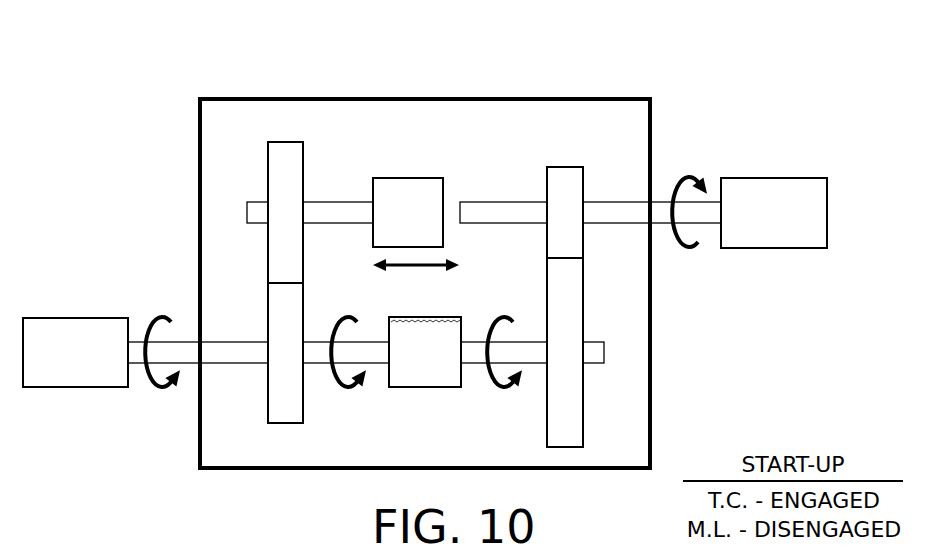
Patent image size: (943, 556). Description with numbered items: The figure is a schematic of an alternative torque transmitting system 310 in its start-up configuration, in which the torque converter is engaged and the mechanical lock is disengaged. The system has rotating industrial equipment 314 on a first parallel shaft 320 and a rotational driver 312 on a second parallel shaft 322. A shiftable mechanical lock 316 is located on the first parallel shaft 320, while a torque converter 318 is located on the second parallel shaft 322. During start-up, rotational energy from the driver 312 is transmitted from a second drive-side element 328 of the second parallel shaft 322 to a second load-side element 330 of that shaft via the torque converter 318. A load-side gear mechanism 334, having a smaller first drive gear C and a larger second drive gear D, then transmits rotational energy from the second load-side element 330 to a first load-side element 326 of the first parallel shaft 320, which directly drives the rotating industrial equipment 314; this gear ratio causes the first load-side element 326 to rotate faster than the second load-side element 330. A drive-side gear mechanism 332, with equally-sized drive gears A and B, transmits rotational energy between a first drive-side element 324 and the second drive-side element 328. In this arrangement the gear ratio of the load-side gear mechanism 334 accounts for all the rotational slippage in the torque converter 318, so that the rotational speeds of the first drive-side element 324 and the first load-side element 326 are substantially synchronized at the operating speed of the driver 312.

The torque transmitting system 310 is at (641, 54).
The rotational driver 312 is at (103, 318).
The rotating industrial equipment 314 is at (800, 178).
The shiftable mechanical lock 316 is at (416, 178).
The torque converter 318 is at (412, 387).
The first parallel shaft 320 is at (257, 192).
The second parallel shaft 322 is at (257, 374).
The first drive-side element 324 is at (337, 202).
The first load-side element 326 is at (493, 202).
The second drive-side element 328 is at (371, 364).
The second load-side element 330 is at (529, 364).
The drive-side gear mechanism 332 is at (287, 132).
The load-side gear mechanism 334 is at (565, 157).